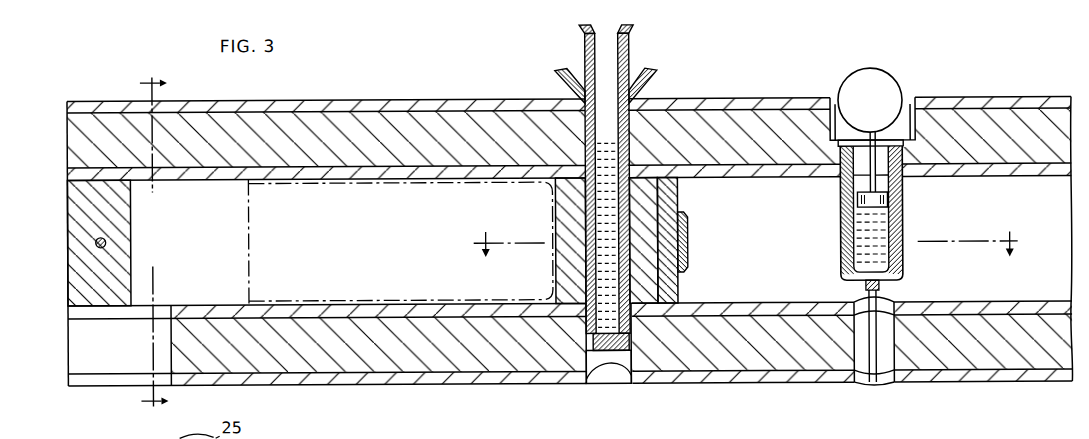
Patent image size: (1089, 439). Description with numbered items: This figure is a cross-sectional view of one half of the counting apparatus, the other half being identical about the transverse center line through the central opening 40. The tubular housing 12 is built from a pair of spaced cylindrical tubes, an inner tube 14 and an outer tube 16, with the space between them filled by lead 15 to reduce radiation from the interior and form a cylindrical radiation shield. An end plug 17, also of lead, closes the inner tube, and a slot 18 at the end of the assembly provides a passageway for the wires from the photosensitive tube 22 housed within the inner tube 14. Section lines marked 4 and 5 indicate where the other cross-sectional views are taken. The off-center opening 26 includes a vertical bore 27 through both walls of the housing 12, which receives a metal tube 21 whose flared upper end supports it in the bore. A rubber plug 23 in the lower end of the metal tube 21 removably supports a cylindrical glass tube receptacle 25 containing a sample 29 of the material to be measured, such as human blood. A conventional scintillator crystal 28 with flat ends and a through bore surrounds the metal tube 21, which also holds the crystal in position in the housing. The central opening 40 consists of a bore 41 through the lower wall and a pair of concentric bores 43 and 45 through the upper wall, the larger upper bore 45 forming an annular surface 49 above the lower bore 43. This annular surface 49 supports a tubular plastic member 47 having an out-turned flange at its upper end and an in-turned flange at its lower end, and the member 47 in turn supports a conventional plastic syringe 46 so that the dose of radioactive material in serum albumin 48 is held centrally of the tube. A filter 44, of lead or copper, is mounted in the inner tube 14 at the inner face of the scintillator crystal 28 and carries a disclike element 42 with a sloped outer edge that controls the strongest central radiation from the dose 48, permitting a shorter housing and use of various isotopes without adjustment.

The section line 4- 4 is at (152, 244).
The section line 5- 5 is at (746, 234).
The tubular housing 12 is at (552, 230).
The inner tube 14 is at (67, 179).
The lead 15 is at (551, 122).
The outer tube 16 is at (67, 103).
The end plug 17 is at (72, 235).
The slot 18 is at (83, 346).
The metal tube 21 is at (562, 80).
The photosensitive tube 22 is at (245, 278).
The rubber plug 23 is at (592, 338).
The cylindrical glass tube receptacle 25 is at (604, 215).
The off-center opening 26 is at (651, 88).
The vertical bore 27 is at (615, 360).
The scintillator crystal 28 is at (560, 272).
The sample 29 is at (605, 200).
The central opening 40 is at (872, 221).
The bore 41 is at (862, 358).
The disclike element 42 is at (685, 256).
The concentric bore 43 is at (918, 148).
The filter 44 is at (667, 290).
The upper concentric bore 45 is at (900, 130).
The plastic syringe 46 is at (858, 80).
The tubular plastic member 47 is at (872, 215).
The dose of radioactive material in serum albumin 48 is at (870, 260).
The annular surface 49 is at (838, 150).